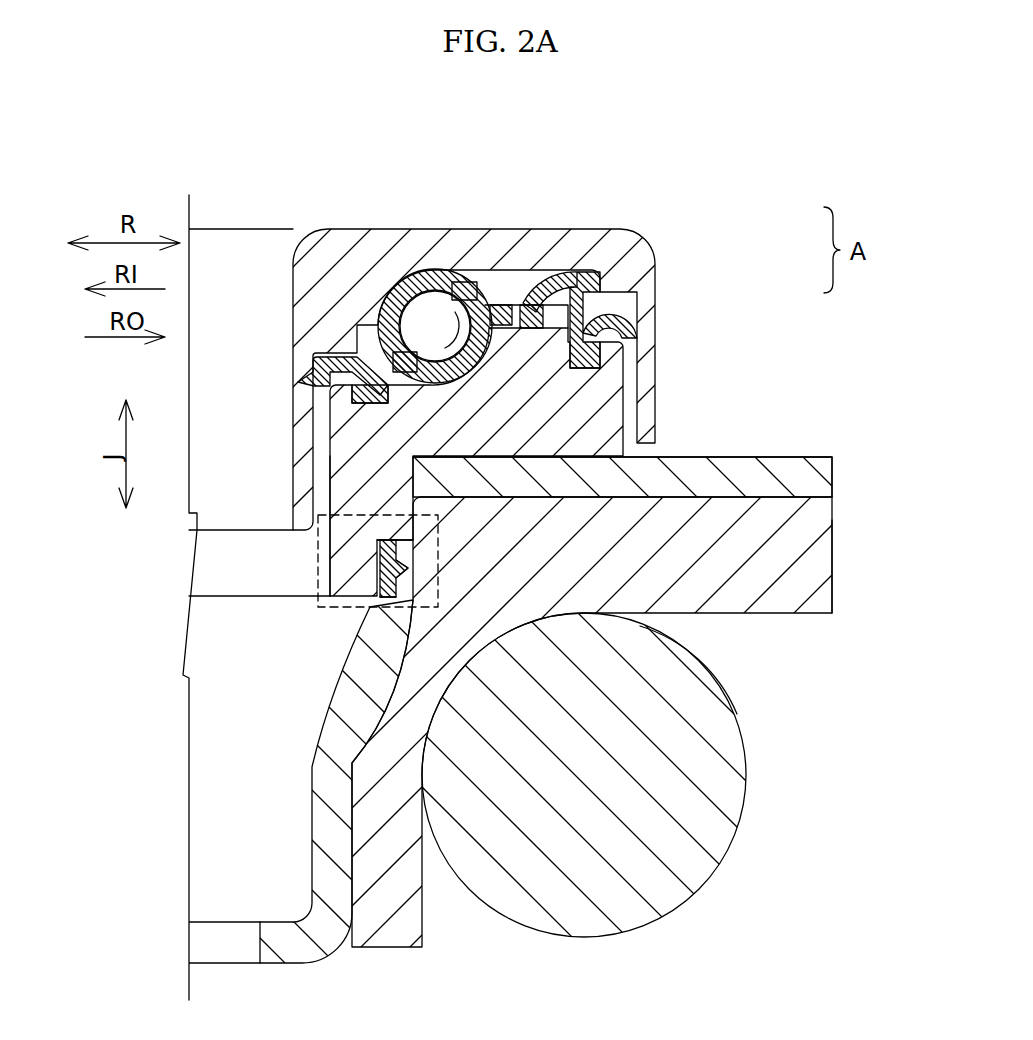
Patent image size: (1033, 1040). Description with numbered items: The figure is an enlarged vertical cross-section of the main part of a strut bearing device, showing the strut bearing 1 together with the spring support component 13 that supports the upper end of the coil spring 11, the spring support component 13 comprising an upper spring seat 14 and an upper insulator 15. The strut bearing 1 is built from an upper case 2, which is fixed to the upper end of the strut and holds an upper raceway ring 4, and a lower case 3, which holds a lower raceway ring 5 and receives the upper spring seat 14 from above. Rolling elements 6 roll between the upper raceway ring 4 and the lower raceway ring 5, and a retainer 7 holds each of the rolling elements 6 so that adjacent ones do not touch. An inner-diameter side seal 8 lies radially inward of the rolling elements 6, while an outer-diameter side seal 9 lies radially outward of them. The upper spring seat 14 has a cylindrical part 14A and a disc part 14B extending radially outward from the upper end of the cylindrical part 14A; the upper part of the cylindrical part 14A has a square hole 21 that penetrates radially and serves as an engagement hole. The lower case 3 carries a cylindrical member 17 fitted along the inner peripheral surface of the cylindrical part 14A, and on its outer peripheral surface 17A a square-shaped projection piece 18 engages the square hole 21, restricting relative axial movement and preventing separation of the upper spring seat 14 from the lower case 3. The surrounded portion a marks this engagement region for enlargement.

The strut bearing 1 is at (685, 247).
The upper case 2 is at (426, 205).
The lower case 3 is at (641, 381).
The upper raceway ring 4 is at (398, 292).
The lower raceway ring 5 is at (527, 303).
The rolling elements 6 is at (433, 325).
The retainer 7 is at (467, 287).
The inner-diameter side seal 8 is at (297, 388).
The outer-diameter side seal 9 is at (648, 304).
The coil spring 11 is at (720, 785).
The spring support component 13 is at (860, 476).
The upper spring seat 14 is at (736, 418).
The cylindrical part 14A is at (326, 827).
The disc part 14B is at (765, 465).
The upper insulator 15 is at (813, 563).
The cylindrical member 17 is at (318, 545).
The outer peripheral surface 17A is at (384, 498).
The square-shaped projection piece 18 is at (370, 603).
The square hole 21 is at (393, 543).
The surrounded portion a is at (370, 600).